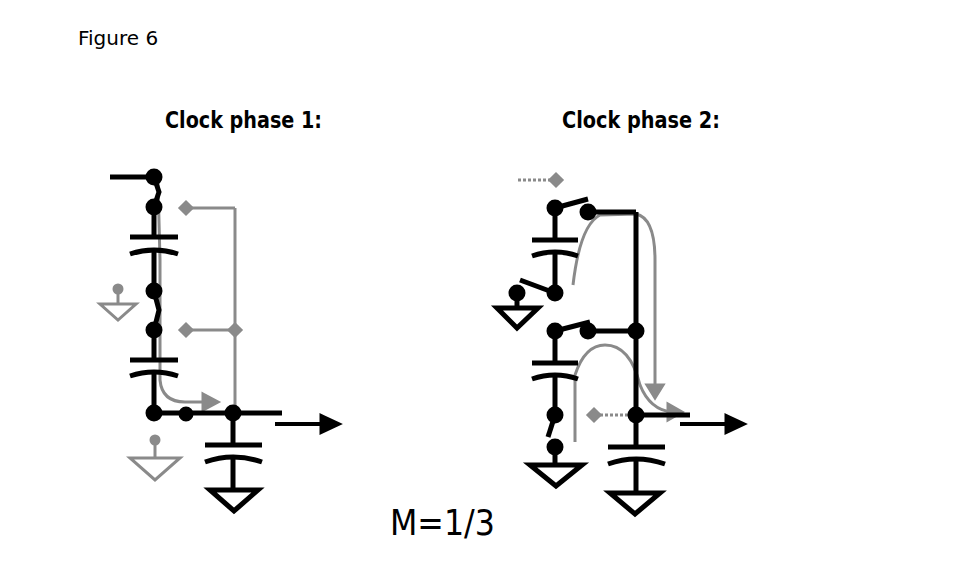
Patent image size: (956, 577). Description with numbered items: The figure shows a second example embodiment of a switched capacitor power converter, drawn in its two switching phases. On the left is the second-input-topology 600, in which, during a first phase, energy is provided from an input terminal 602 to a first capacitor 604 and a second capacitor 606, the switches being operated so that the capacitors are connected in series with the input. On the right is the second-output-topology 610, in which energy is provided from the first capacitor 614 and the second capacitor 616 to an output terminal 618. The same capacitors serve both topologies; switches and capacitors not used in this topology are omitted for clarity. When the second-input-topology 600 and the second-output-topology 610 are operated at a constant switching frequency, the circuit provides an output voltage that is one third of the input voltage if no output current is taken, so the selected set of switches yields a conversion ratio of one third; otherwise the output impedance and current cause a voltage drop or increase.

The second-input-topology 600 is at (320, 232).
The input terminal 602 is at (125, 176).
The first capacitor 604 is at (146, 252).
The second capacitor 606 is at (148, 375).
The second-output-topology 610 is at (730, 236).
The first capacitor 614 is at (540, 240).
The second capacitor 616 is at (540, 363).
The output terminal 618 is at (684, 413).